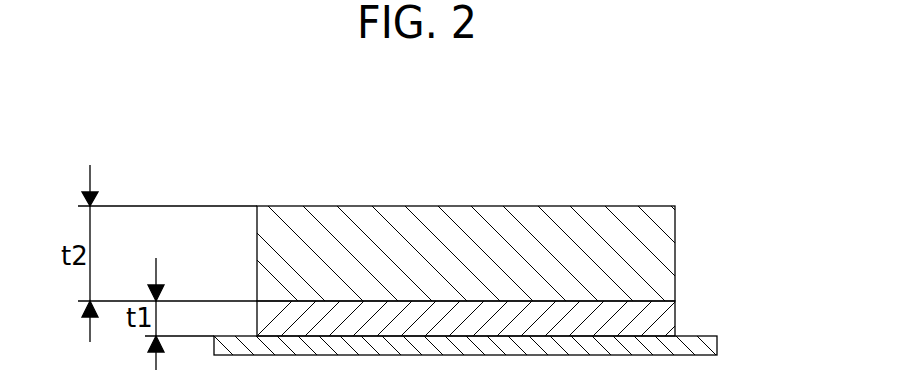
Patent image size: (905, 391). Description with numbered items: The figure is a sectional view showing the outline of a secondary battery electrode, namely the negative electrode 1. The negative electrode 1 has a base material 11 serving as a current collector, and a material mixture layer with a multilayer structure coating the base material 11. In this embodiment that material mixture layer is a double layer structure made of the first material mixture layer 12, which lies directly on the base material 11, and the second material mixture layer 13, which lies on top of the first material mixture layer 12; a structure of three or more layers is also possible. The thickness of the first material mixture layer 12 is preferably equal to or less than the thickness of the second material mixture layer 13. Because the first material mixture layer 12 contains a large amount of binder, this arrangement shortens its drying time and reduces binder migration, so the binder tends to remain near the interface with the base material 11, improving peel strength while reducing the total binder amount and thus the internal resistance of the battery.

The negative electrode 1 is at (514, 215).
The base material 11 is at (717, 345).
The first material mixture layer 12 is at (675, 318).
The second material mixture layer 13 is at (675, 252).